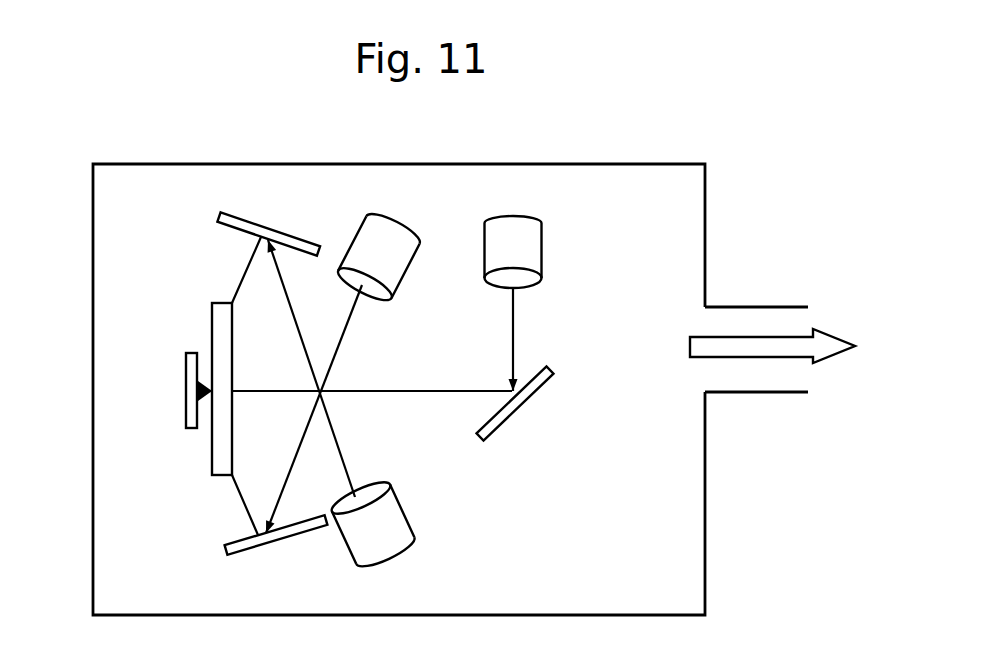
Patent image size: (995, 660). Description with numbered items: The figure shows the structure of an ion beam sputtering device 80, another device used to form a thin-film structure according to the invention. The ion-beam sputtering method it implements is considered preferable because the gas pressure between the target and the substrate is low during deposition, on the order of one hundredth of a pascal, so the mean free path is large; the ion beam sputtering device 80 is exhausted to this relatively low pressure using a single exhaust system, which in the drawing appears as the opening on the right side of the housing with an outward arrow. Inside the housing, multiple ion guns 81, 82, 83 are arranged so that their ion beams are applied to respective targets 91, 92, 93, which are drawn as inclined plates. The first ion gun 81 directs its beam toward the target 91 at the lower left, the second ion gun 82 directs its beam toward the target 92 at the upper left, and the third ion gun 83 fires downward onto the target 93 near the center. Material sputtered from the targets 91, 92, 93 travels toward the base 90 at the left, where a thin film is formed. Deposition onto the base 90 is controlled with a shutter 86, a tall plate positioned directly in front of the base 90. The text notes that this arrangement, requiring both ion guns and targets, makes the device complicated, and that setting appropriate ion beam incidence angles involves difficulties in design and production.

The ion beam sputtering device 80 is at (740, 220).
The ion gun 81 is at (395, 238).
The ion gun 82 is at (392, 548).
The ion gun 83 is at (530, 247).
The shutter 86 is at (220, 453).
The base 90 is at (188, 375).
The target 91 is at (243, 548).
The target 92 is at (307, 243).
The target 93 is at (505, 415).